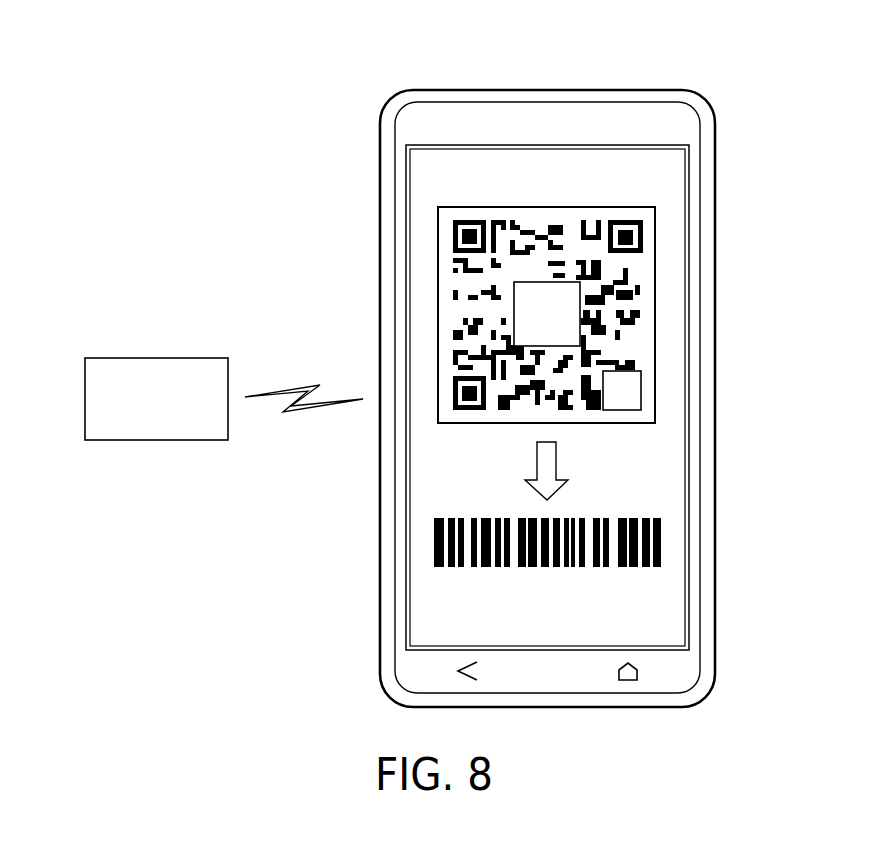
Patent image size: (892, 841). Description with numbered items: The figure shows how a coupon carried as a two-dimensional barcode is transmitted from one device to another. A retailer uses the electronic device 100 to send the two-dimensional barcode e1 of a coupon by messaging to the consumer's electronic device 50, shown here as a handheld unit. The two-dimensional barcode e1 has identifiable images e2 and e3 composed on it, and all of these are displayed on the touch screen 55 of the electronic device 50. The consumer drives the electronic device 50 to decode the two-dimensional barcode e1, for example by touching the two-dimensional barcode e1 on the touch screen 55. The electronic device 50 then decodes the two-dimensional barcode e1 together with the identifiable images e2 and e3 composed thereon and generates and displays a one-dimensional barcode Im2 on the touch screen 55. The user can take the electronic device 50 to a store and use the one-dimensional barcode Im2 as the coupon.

The electronic device 50 is at (557, 115).
The touch screen 55 is at (670, 182).
The 2D barcode e1 is at (630, 283).
The identifiable image e2 is at (570, 331).
The identifiable image e3 is at (645, 407).
The 1D barcode Im2 is at (583, 505).
The electronic device 100 is at (157, 358).